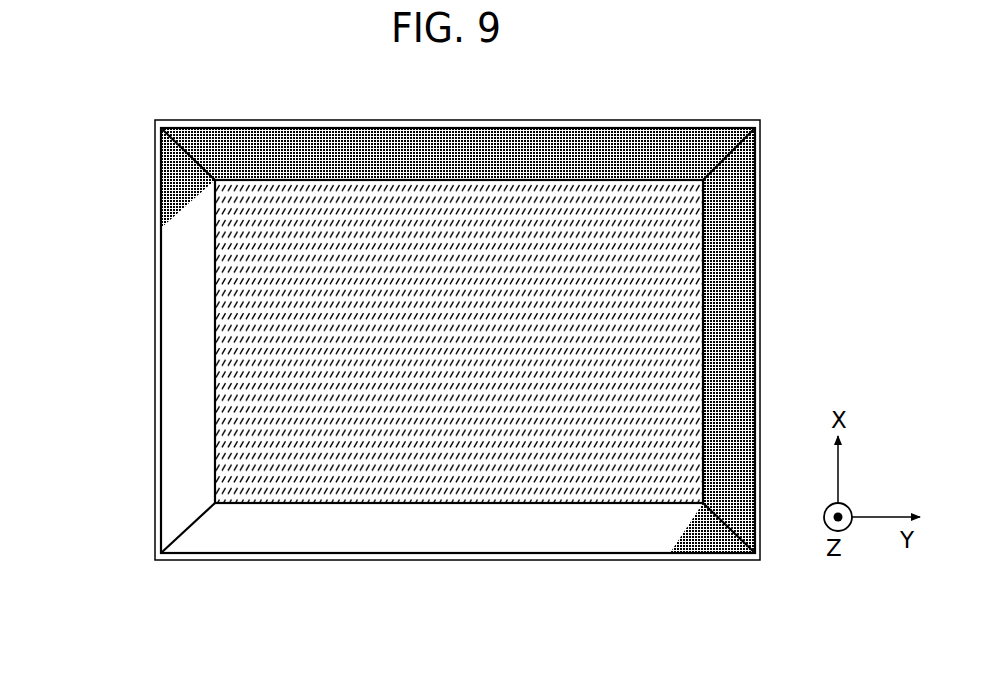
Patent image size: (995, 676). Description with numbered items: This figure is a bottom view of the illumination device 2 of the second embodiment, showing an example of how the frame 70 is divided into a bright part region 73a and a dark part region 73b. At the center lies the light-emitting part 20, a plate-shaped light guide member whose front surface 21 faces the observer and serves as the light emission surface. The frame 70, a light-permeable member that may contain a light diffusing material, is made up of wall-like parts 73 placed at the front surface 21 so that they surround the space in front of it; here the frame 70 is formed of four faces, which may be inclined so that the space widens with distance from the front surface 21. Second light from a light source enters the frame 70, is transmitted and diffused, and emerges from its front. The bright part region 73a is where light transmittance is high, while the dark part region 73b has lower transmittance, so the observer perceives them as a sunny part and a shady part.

The illumination device 2 is at (729, 96).
The light-emitting part 20 is at (643, 193).
The front surface 21 is at (412, 205).
The frame 70 is at (368, 550).
The wall-like part 73 is at (477, 525).
The bright part region 73a is at (175, 422).
The dark part region 73b is at (747, 341).